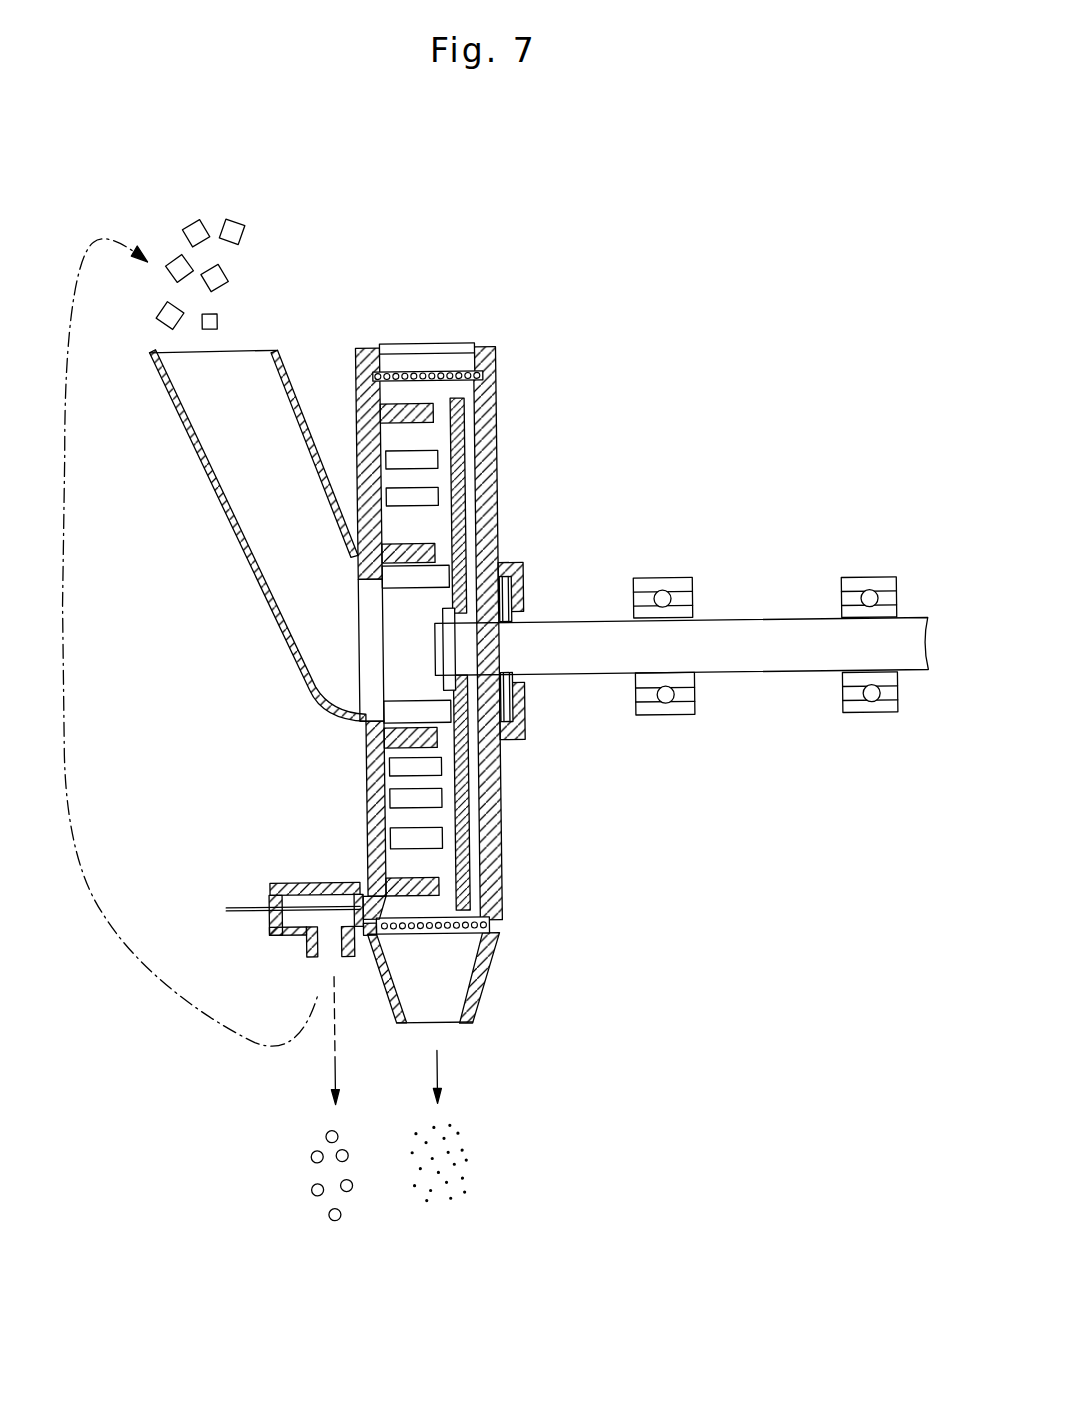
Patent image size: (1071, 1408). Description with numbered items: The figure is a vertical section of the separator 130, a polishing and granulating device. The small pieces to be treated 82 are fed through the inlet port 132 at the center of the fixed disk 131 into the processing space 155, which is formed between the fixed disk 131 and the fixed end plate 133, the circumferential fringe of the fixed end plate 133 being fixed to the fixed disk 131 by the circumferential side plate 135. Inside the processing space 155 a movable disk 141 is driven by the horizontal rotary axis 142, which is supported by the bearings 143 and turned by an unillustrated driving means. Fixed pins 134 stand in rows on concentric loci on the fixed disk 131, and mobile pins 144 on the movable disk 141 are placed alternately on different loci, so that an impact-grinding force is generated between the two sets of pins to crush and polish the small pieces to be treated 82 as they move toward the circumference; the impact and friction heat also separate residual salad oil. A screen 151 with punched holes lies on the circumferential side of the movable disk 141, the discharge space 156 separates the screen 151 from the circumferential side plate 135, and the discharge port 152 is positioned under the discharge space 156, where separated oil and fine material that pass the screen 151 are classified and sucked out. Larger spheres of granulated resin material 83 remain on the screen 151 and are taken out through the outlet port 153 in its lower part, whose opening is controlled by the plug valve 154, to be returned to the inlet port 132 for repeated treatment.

The small pieces to be treated 82 is at (249, 271).
The granulated resin material 83 is at (300, 1185).
The separator 130 is at (422, 684).
The fixed disk 131 is at (358, 410).
The inlet port 132 is at (232, 452).
The fixed end plate 133 is at (470, 440).
The fixed pins 134 is at (428, 402).
The circumferential side plate 135 is at (443, 343).
The movable disk 141 is at (466, 767).
The horizontal rotary axis 142 is at (757, 656).
The bearings 143 is at (660, 722).
The mobile pins 144 is at (432, 492).
The screen 151 is at (463, 372).
The discharge port 152 is at (441, 995).
The outlet port 153 is at (329, 950).
The plug valve 154 is at (240, 904).
The processing space 155 is at (400, 610).
The discharge space 156 is at (398, 360).